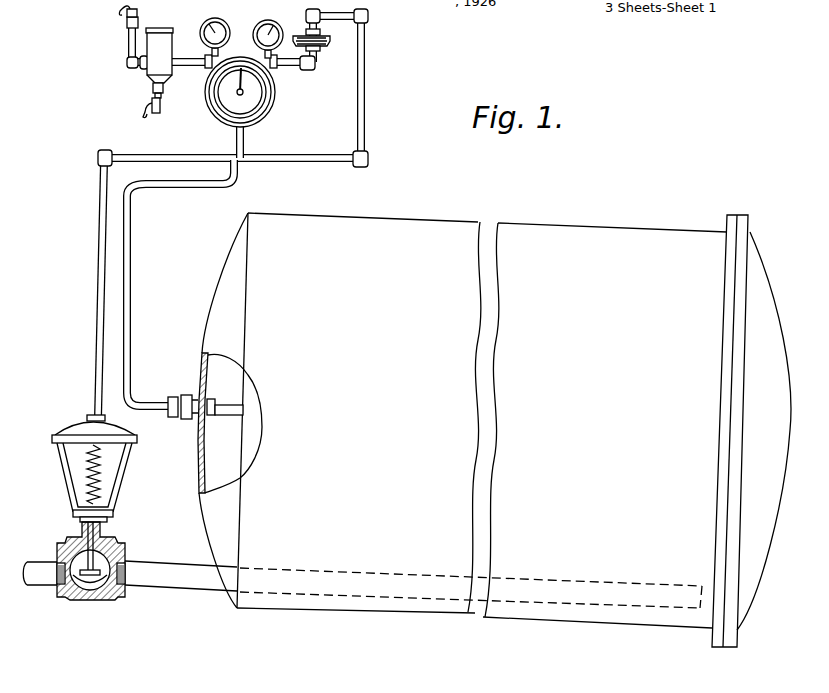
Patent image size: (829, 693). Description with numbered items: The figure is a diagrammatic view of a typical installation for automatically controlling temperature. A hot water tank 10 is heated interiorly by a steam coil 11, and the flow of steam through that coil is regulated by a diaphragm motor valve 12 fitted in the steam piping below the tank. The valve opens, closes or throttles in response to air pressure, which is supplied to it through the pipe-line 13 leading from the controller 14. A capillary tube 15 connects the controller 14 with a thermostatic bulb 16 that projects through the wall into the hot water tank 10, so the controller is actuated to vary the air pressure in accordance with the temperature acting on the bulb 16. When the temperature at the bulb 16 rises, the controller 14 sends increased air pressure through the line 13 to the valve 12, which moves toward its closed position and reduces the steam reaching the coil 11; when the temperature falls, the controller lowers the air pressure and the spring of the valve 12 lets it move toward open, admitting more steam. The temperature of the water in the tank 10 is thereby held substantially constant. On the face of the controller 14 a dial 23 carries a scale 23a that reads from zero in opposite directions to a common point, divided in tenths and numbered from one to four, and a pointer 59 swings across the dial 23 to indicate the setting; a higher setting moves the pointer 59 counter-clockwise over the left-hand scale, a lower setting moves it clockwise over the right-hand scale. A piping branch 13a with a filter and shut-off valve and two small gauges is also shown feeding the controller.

The hot water tank 10 is at (494, 430).
The steam coil 11 is at (190, 583).
The diaphragm motor valve 12 is at (90, 578).
The pipe-line 13 is at (97, 355).
The filter and cut-off valve 13a is at (190, 66).
The controller 14 is at (265, 79).
The capillary tube 15 is at (183, 188).
The thermostatic bulb 16 is at (227, 416).
The dial 23 is at (232, 115).
The scale 23a is at (270, 102).
The pointer 59 is at (242, 72).